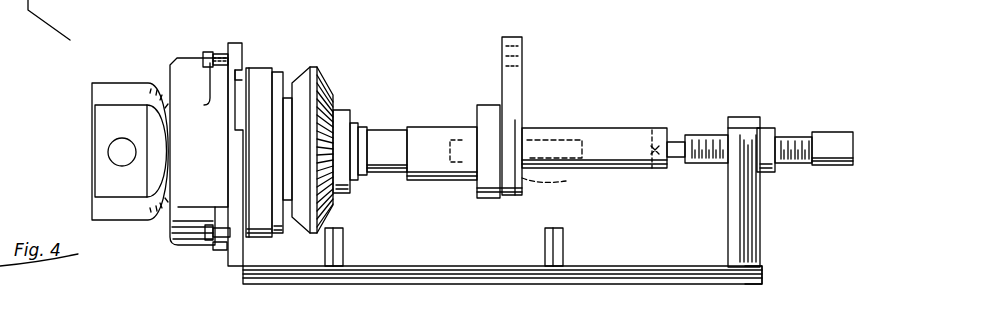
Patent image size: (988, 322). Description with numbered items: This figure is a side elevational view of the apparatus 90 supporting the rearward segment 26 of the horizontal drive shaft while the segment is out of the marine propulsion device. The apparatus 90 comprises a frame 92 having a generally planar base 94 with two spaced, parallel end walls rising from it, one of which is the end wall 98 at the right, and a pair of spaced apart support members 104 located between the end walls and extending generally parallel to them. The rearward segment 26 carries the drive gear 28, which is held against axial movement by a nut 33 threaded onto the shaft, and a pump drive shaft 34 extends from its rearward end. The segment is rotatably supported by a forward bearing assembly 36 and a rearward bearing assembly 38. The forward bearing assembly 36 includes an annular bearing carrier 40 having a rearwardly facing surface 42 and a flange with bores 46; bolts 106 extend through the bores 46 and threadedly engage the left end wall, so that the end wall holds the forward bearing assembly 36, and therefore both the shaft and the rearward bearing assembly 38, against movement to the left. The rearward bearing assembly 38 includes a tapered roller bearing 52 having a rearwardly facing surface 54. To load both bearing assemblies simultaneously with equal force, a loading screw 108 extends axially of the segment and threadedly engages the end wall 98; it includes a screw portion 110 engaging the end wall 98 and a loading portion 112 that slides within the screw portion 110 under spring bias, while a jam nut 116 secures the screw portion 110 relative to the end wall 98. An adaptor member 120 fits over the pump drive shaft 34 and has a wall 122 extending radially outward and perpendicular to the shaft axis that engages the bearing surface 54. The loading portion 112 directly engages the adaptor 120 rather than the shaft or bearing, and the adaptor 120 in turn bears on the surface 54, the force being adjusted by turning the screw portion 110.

The rearward segment 26 is at (386, 128).
The drive gear 28 is at (320, 86).
The nut 33 is at (342, 108).
The pump drive shaft 34 is at (546, 179).
The forward bearing assembly 36 is at (189, 246).
The rearward bearing assembly 38 is at (480, 101).
The bearing carrier 40 is at (176, 232).
The rearwardly facing surface 42 is at (234, 81).
The bores 46 is at (192, 54).
The tapered roller bearing 52 is at (482, 193).
The rearwardly facing surface 54 is at (516, 193).
The apparatus 90 is at (521, 215).
The frame 92 is at (697, 272).
The base 94 is at (762, 271).
The end wall 98 is at (740, 203).
The support members 104 is at (334, 236).
The bolts 106 is at (209, 242).
The loading screw 108 is at (812, 112).
The screw portion 110 is at (840, 140).
The loading portion 112 is at (652, 126).
The jam nut 116 is at (773, 128).
The adaptor member 120 is at (596, 128).
The wall 122 is at (513, 62).